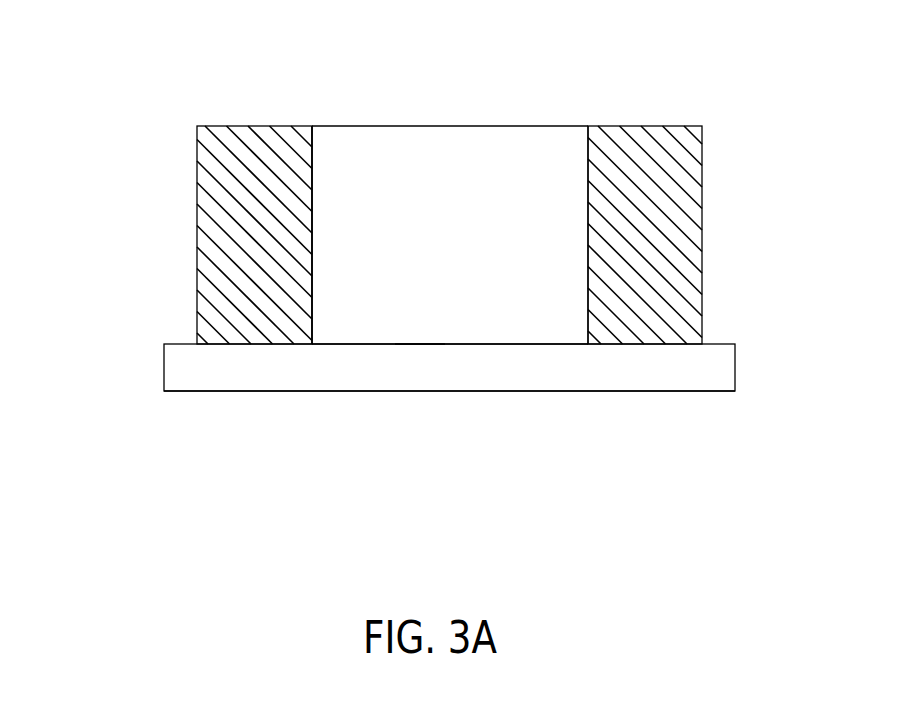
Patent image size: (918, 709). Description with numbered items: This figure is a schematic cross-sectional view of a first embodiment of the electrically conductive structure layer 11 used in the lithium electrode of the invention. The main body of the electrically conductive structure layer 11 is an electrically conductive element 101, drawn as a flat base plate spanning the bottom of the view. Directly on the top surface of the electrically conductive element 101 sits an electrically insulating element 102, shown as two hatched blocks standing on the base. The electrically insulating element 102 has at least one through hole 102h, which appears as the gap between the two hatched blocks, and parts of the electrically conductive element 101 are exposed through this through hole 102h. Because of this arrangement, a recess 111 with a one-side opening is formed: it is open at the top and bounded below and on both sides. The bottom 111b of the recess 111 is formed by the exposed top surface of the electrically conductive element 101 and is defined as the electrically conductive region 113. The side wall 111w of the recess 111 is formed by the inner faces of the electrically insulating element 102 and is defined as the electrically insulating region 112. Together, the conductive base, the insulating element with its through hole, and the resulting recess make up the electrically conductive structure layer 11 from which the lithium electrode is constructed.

The electrically conductive structure layer 11 is at (122, 100).
The electrically conductive element 101 is at (163, 362).
The electrically insulating element 102 is at (197, 232).
The through hole 102h is at (524, 128).
The recess 111 is at (466, 104).
The side wall 111w is at (588, 182).
The bottom 111b is at (542, 346).
The electrically insulating region 112 is at (312, 198).
The electrically conductive region 113 is at (395, 343).